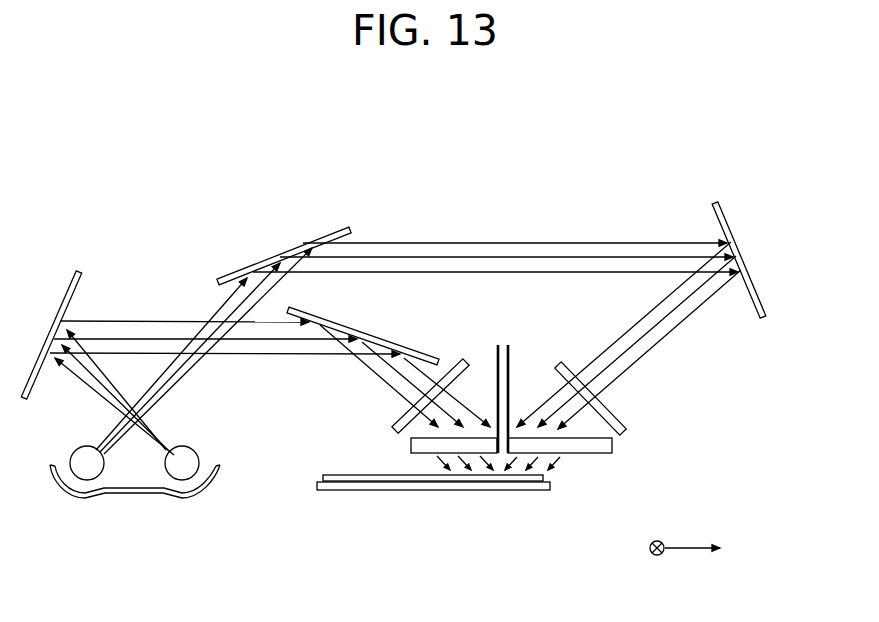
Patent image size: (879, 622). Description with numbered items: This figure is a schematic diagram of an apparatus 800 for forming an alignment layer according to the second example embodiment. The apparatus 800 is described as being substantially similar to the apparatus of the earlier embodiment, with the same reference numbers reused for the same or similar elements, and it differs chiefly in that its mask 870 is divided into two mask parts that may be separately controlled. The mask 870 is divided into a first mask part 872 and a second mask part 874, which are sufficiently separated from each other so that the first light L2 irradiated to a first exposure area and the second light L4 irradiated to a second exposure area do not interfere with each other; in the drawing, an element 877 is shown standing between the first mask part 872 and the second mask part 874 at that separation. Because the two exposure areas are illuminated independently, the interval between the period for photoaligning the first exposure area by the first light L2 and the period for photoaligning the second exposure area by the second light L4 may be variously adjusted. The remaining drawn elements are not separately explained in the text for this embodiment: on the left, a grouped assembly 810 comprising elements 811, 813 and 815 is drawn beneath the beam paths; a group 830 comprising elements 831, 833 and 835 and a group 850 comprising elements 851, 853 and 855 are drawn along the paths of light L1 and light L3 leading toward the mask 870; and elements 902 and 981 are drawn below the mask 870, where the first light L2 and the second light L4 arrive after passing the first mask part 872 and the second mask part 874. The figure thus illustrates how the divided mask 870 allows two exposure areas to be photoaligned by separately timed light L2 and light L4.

The apparatus for forming an alignment layer 800 is at (192, 156).
The light source unit 810 is at (190, 557).
The first light source 811 is at (88, 482).
The second light source 813 is at (182, 482).
The light source holder 815 is at (200, 498).
The first reflection unit 830 is at (385, 557).
The first reflection mirror 831 is at (82, 295).
The second reflection mirror 833 is at (330, 324).
The third reflection mirror 835 is at (393, 428).
The second reflection unit 850 is at (655, 168).
The fourth reflection mirror 851 is at (352, 228).
The fifth reflection mirror 853 is at (713, 215).
The sixth reflection mirror 855 is at (553, 362).
The mask 870 is at (613, 446).
The first mask part 872 is at (574, 451).
The second mask part 874 is at (423, 450).
The partition wall 877 is at (494, 360).
The substrate 902 is at (470, 487).
The light incident layer 981 is at (527, 487).
The first light L1 is at (690, 322).
The first light L2 is at (577, 417).
The third light L3 is at (381, 366).
The second light L4 is at (452, 392).